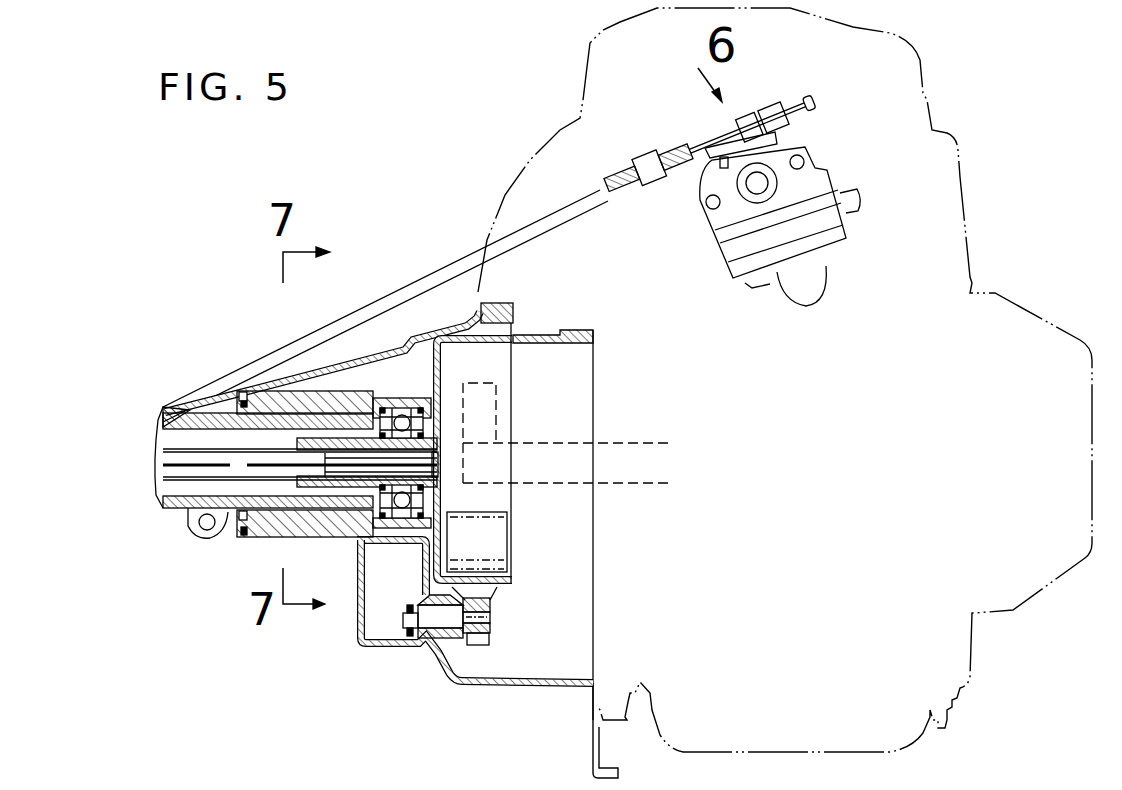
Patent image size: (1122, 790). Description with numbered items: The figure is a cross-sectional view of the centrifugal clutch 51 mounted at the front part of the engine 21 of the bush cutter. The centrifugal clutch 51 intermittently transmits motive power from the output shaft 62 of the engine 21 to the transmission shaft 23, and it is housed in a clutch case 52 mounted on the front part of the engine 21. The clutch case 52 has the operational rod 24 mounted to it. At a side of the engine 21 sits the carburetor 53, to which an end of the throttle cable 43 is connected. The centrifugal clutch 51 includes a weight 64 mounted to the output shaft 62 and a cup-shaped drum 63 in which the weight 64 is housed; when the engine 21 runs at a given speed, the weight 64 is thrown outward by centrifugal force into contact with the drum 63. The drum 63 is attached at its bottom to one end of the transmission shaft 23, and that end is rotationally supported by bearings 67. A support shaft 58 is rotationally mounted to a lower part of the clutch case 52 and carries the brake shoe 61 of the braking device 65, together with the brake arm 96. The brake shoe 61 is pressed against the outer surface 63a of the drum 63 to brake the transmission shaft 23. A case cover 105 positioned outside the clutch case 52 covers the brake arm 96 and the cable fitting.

The engine 21 is at (962, 178).
The transmission shaft 23 is at (180, 477).
The operational rod 24 is at (165, 508).
The throttle cable 43 is at (521, 229).
The centrifugal clutch 51 is at (512, 433).
The clutch case 52 is at (437, 338).
The carburetor 53 is at (830, 296).
The support shaft 58 is at (426, 638).
The brake shoe 61 is at (480, 492).
The output shaft 62 is at (575, 473).
The drum 63 is at (435, 377).
The outer surface of the drum 63a is at (510, 303).
The weight 64 is at (500, 398).
The braking device 65 is at (512, 461).
The bearings 67 is at (398, 522).
The brake arm 96 is at (407, 636).
The case cover 105 is at (375, 641).